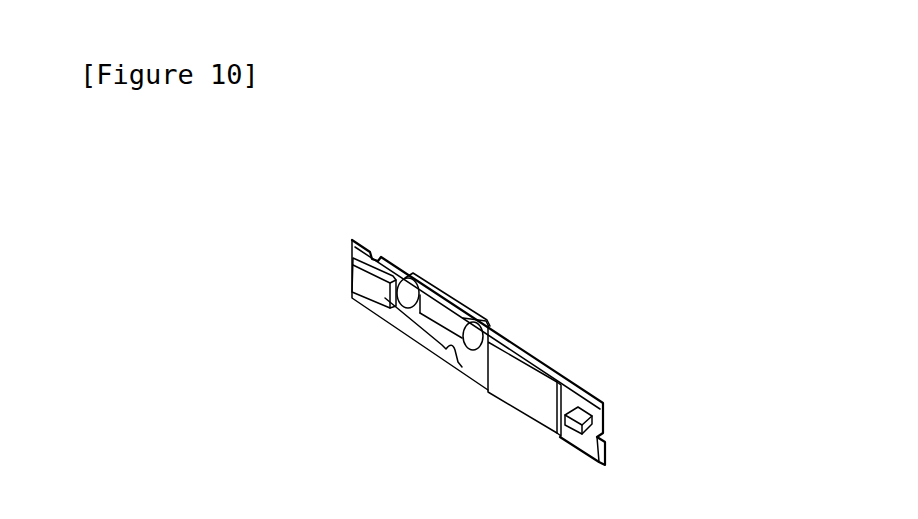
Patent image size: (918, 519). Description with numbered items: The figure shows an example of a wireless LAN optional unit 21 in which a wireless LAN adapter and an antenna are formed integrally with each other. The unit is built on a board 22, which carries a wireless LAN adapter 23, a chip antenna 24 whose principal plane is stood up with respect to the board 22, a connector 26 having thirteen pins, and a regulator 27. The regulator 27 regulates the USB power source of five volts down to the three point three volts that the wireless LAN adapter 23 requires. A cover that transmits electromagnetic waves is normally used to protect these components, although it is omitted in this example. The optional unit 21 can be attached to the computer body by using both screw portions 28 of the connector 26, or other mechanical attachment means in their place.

The wireless LAN optional unit 21 is at (617, 410).
The board 22 is at (353, 240).
The wireless LAN adapter 23 is at (527, 400).
The chip antenna 24 is at (580, 414).
The connector 26 is at (442, 284).
The regulator 27 is at (367, 291).
The screw portions 28 is at (413, 303).